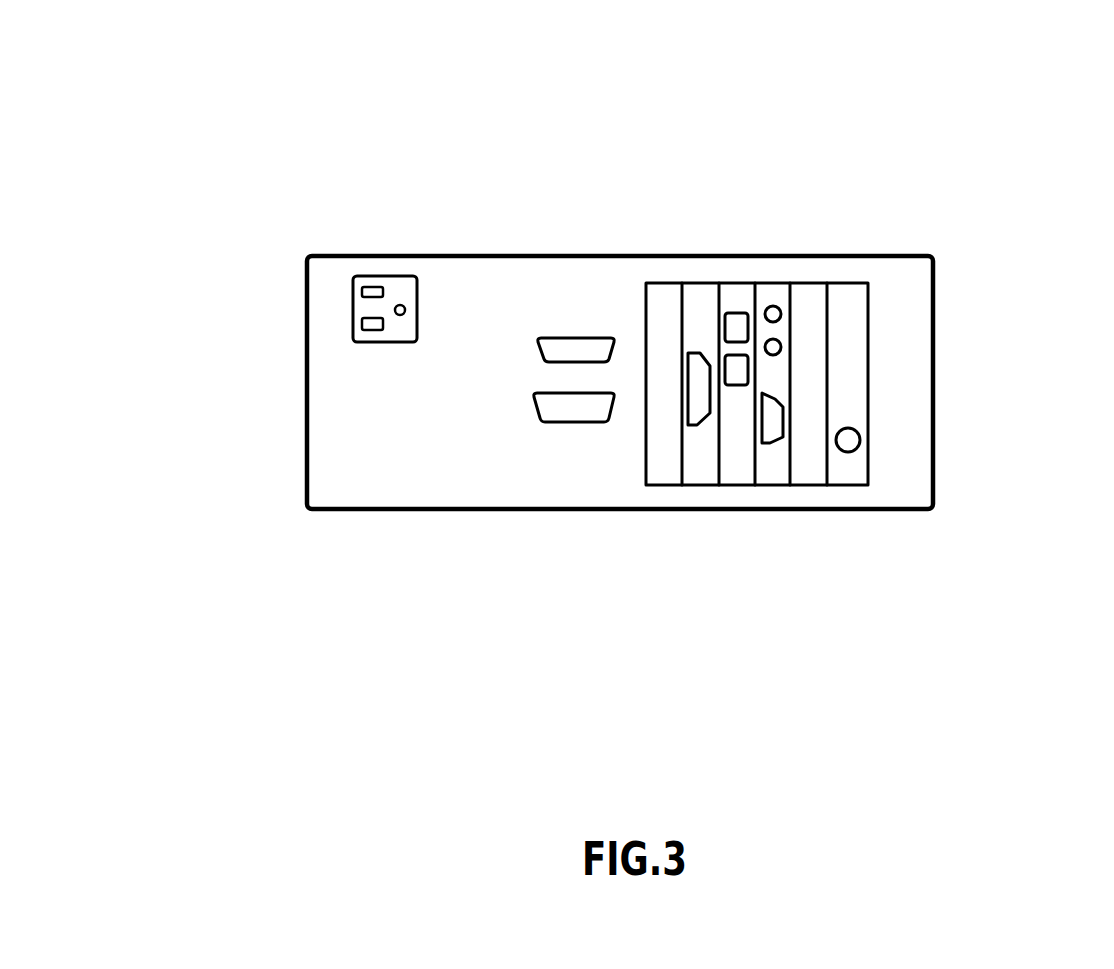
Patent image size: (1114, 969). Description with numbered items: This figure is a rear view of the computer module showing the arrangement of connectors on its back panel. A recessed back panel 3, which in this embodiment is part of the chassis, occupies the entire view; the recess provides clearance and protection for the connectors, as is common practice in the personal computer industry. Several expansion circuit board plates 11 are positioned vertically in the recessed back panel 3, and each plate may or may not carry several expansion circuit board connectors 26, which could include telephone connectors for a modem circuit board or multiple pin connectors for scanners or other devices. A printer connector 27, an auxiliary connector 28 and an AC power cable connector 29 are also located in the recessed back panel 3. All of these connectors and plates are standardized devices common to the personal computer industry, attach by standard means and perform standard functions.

The recessed back panel 3 is at (433, 470).
The expansion circuit board plates 11 is at (695, 320).
The expansion circuit board connectors 26 is at (770, 413).
The printer connector 27 is at (560, 349).
The auxiliary connector 28 is at (568, 410).
The AC power cable connector 29 is at (367, 310).